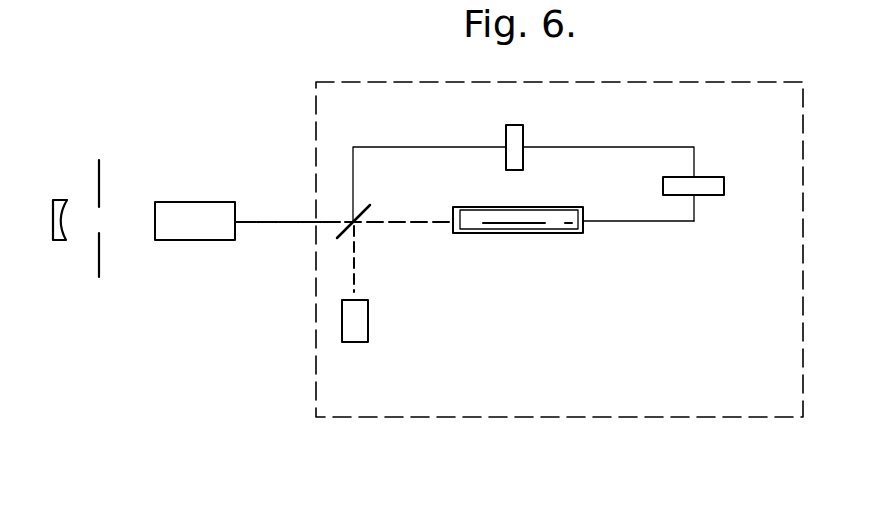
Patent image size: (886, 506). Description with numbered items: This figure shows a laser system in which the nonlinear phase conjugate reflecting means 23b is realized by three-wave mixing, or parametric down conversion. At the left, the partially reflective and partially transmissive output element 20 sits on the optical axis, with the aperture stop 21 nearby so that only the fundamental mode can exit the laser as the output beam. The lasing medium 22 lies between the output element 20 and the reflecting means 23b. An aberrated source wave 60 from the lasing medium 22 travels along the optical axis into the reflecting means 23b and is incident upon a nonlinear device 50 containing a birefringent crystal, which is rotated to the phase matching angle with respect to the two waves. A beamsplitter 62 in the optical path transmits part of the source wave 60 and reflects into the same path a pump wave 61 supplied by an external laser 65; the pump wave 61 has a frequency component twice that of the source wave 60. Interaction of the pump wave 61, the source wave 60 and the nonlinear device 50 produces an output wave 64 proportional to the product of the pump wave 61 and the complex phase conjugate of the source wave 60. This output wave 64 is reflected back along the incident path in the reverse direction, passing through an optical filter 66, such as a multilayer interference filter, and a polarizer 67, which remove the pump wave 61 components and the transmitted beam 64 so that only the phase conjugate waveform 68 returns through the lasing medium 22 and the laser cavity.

The output element 20 is at (53, 200).
The aperture stop 21 is at (98, 172).
The lasing medium 22 is at (155, 203).
The nonlinear phase conjugate reflecting means 23b is at (370, 418).
The nonlinear device 50 is at (583, 235).
The source wave 60 is at (300, 223).
The pump wave 61 is at (355, 291).
The beamsplitter 62 is at (362, 207).
The output wave 64 is at (607, 219).
The external laser 65 is at (368, 342).
The optical filter 66 is at (724, 178).
The polarizer 67 is at (523, 127).
The phase conjugate waveform 68 is at (263, 218).